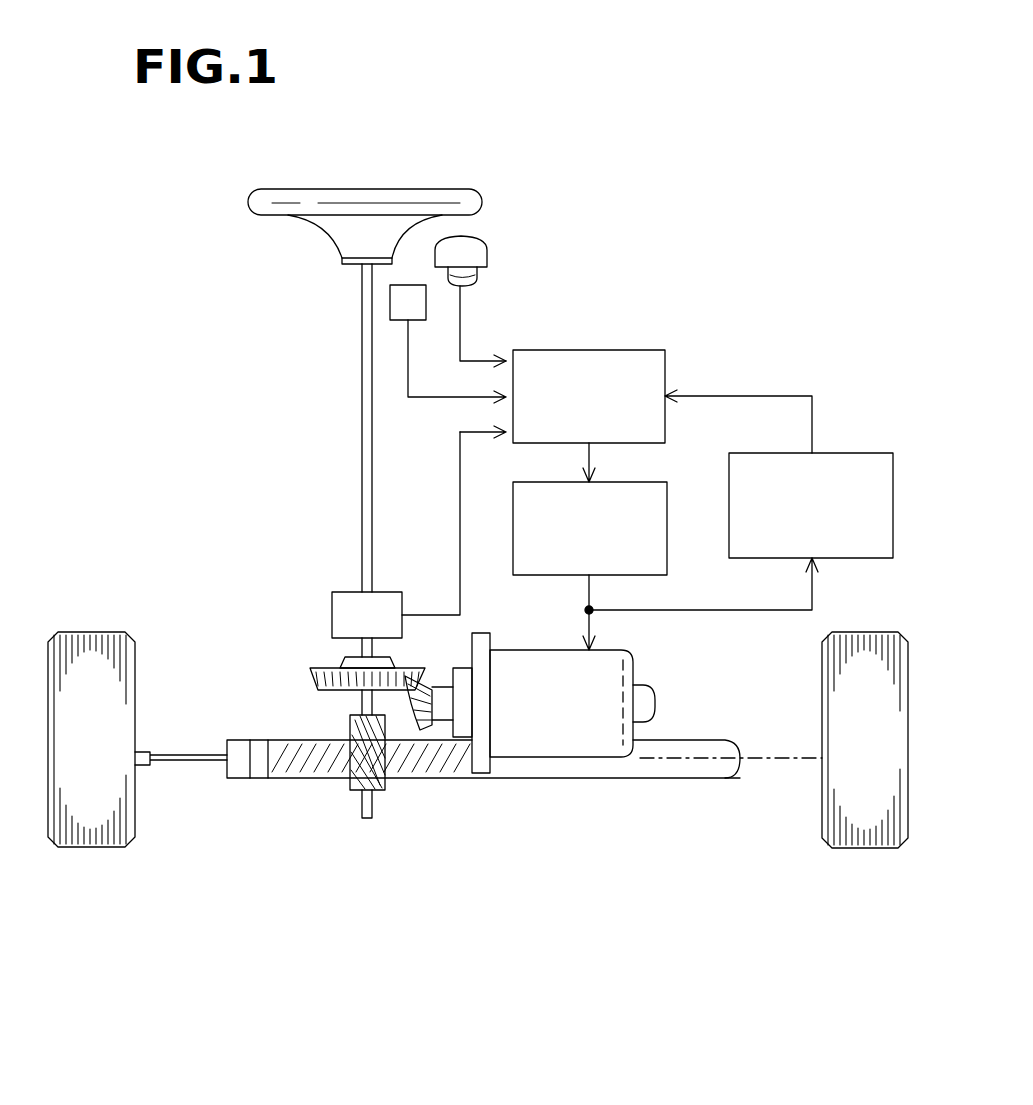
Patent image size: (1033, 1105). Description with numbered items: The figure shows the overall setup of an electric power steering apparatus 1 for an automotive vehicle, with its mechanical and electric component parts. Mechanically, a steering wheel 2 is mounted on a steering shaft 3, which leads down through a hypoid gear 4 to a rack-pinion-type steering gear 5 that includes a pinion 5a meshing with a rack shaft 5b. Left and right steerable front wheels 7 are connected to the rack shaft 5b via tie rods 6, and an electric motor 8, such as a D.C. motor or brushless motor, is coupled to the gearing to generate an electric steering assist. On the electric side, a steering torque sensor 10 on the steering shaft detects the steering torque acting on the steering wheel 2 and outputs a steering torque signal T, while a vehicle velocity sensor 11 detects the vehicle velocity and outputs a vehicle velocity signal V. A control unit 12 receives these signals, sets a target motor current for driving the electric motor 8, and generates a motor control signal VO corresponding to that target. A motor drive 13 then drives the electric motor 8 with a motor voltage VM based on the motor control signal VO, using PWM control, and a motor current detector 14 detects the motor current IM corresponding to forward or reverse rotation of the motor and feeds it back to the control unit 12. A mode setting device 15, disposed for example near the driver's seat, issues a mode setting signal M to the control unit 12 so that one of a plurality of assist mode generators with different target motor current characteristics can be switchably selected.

The electric power steering apparatus 1 is at (372, 123).
The steering wheel 2 is at (437, 190).
The steering shaft 3 is at (360, 402).
The hypoid gear 4 is at (420, 775).
The rack-pinion-type steering gear 5 is at (338, 790).
The pinion 5a is at (385, 780).
The rack shaft 5b is at (682, 755).
The tie rods 6 is at (178, 762).
The steerable front wheels 7 is at (85, 632).
The electric motor 8 is at (635, 657).
The steering torque sensor 10 is at (332, 615).
The vehicle velocity sensor 11 is at (470, 250).
The control unit 12 is at (600, 350).
The motor drive 13 is at (637, 482).
The motor current detector 14 is at (832, 453).
The mode setting device 15 is at (427, 305).